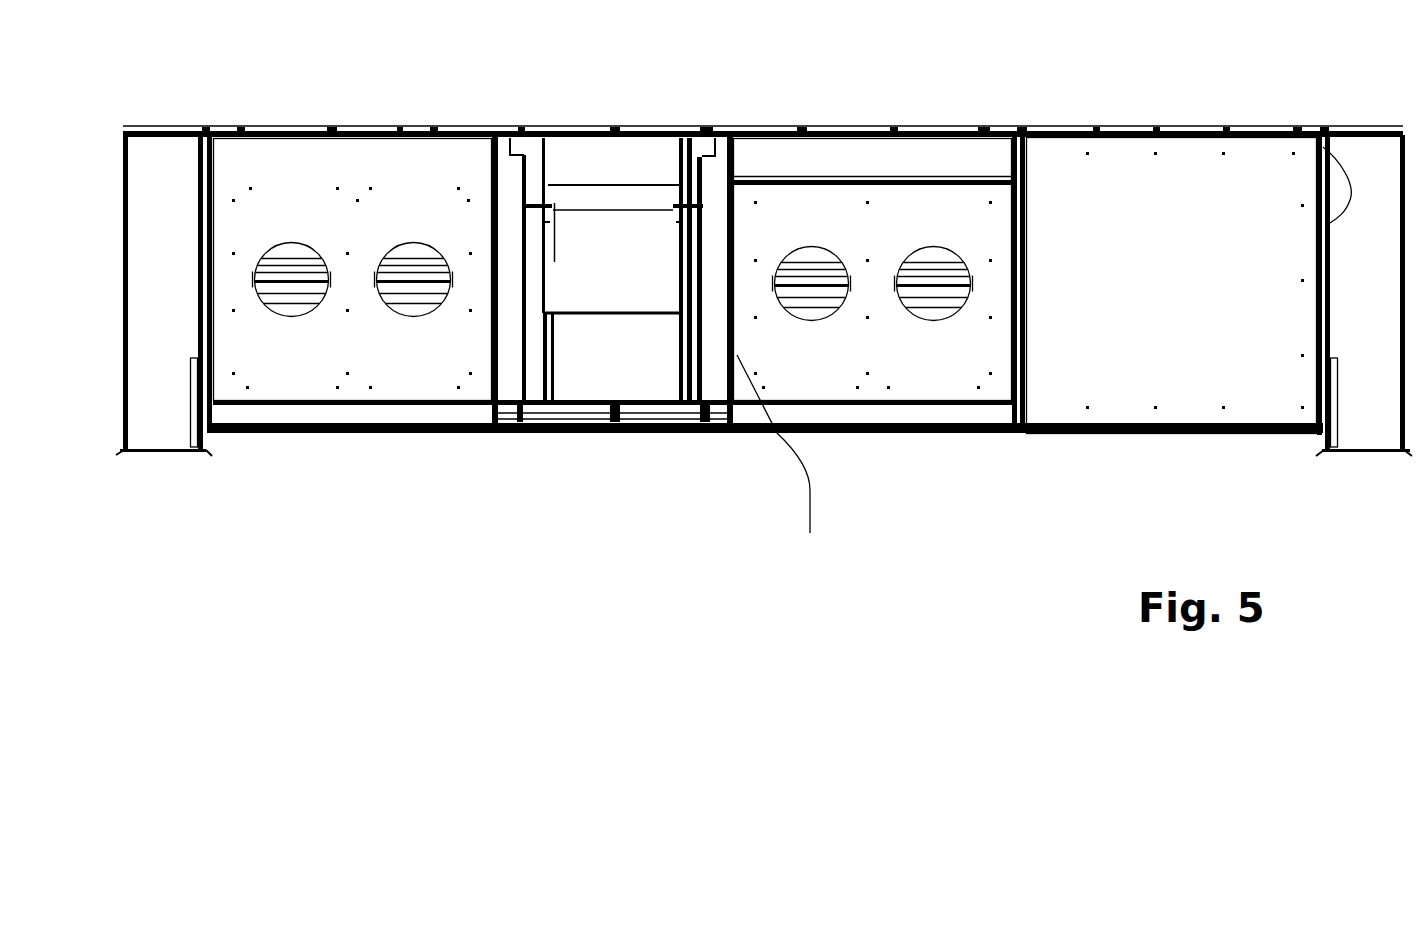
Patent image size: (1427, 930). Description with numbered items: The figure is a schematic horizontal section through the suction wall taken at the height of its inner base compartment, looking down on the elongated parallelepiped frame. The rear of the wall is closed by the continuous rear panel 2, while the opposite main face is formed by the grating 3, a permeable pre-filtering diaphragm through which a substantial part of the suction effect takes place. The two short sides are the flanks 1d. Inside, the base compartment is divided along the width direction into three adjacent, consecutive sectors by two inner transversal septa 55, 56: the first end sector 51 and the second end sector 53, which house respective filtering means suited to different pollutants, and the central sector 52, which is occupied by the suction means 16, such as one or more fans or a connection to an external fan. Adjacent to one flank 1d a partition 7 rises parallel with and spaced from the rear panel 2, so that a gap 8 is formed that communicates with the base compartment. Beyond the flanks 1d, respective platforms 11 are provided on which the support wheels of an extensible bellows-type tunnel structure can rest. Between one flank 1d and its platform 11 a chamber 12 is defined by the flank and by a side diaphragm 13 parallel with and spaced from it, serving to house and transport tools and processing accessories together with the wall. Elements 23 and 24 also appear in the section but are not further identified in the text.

The side flank 1d is at (228, 137).
The rear panel 2 is at (732, 150).
The grating 3 is at (530, 435).
The partition 7 is at (920, 182).
The gap 8 is at (840, 176).
The platform 11 is at (160, 417).
The chamber 12 is at (1173, 235).
The side diaphragm 13 is at (1322, 145).
The suction means 16 is at (620, 232).
The left fan panel 23 is at (317, 152).
The right fan panel 24 is at (960, 210).
The end sector 51 is at (403, 290).
The central sector 52 is at (631, 345).
The end sector 53 is at (920, 298).
The inner transversal septum 55 is at (490, 230).
The inner transversal septum 56 is at (785, 461).